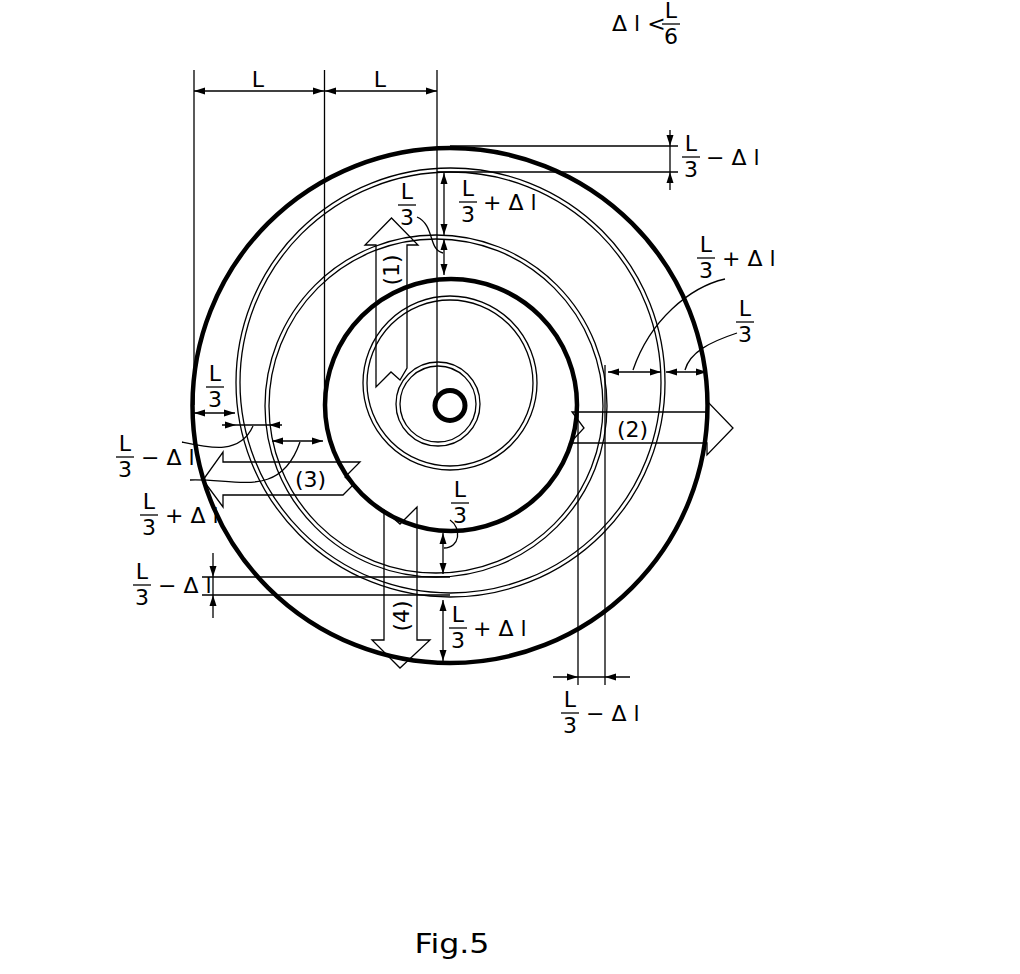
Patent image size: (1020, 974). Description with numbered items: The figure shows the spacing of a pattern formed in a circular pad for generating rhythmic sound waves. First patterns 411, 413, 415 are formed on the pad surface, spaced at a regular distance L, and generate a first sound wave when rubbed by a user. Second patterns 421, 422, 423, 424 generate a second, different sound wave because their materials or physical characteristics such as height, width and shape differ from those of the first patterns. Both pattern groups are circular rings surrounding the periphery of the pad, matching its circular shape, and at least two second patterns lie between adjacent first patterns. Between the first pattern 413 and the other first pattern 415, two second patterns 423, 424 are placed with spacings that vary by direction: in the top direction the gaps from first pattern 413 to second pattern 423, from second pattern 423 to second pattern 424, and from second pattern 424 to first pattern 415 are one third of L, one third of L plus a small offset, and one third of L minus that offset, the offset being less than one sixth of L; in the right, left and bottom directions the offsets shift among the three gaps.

The first pattern 411 is at (441, 417).
The first pattern 413 is at (578, 318).
The first pattern 415 is at (707, 458).
The second pattern 421 is at (467, 374).
The second pattern 422 is at (518, 433).
The second pattern 423 is at (607, 395).
The second pattern 424 is at (650, 478).